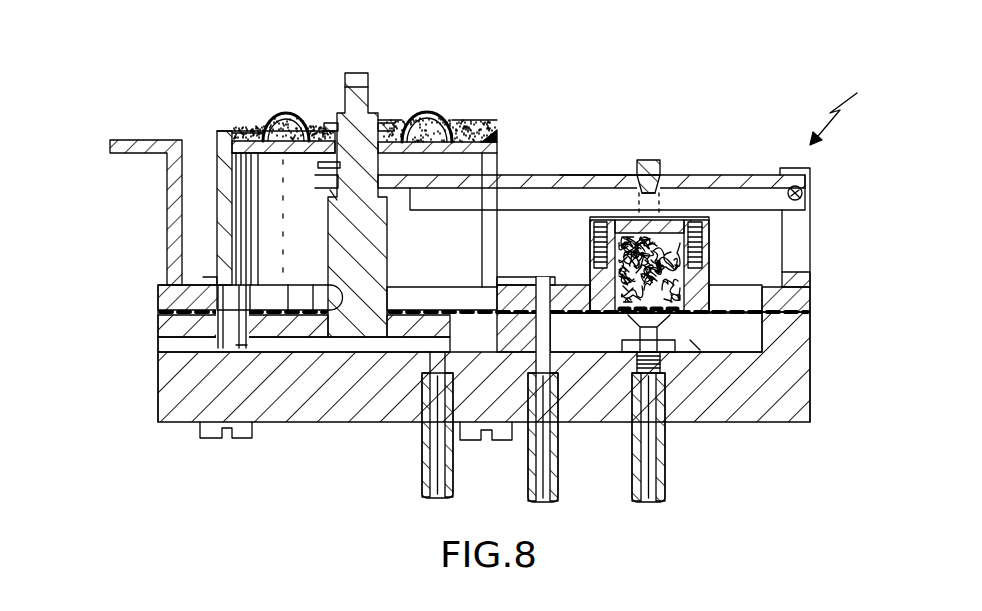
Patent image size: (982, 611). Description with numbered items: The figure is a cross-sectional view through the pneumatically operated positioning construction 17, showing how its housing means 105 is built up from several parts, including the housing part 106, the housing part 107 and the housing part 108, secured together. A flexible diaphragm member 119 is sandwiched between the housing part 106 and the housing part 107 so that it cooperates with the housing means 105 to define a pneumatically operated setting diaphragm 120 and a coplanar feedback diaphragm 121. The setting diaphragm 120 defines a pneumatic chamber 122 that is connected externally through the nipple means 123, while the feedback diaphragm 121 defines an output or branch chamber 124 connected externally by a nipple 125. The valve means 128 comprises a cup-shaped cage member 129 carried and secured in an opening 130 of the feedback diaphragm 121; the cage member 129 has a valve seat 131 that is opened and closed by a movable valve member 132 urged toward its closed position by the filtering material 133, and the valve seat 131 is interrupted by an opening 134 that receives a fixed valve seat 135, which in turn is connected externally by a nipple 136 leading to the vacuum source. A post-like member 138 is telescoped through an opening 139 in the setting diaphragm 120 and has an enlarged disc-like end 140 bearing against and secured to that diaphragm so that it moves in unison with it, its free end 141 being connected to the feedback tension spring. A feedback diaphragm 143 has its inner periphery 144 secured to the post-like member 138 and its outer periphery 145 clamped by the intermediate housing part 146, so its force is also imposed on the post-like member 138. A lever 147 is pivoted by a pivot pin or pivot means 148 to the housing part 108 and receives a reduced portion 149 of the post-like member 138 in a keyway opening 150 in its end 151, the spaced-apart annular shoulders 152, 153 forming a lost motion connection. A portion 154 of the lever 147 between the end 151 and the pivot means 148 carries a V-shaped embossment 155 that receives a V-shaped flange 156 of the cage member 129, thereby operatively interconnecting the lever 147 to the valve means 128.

The pneumatically operated positioning construction 17 is at (860, 78).
The housing means 105 is at (797, 363).
The housing part 106 is at (797, 398).
The housing part 107 is at (802, 297).
The housing part 108 is at (800, 279).
The flexible diaphragm member 119 is at (798, 318).
The pneumatically operated setting diaphragm 120 is at (240, 318).
The feedback diaphragm 121 is at (563, 287).
The pneumatic chamber 122 is at (242, 345).
The nipple means 123 is at (425, 472).
The output or branch chamber 124 is at (697, 343).
The nipple 125 is at (533, 466).
The valve means 128 is at (725, 250).
The cup-shaped cage member 129 is at (710, 243).
The opening 130 is at (700, 297).
The valve seat 131 is at (690, 328).
The movable valve member 132 is at (610, 267).
The filtering material 133 is at (663, 240).
The opening 134 is at (602, 337).
The fixed valve seat 135 is at (650, 333).
The nipple 136 is at (667, 477).
The post-like member 138 is at (387, 227).
The opening 139 is at (343, 298).
The enlarged disc-like end 140 is at (407, 338).
The free end 141 is at (368, 100).
The feedback diaphragm 143 is at (290, 112).
The inner periphery 144 is at (333, 123).
The outer periphery 145 is at (218, 165).
The intermediate housing part 146 is at (215, 167).
The lever 147 is at (540, 175).
The pivot pin or pivot means 148 is at (803, 197).
The reduced portion 149 is at (337, 180).
The keyway opening 150 is at (410, 177).
The end 151 is at (297, 182).
The annular shoulder 152 is at (336, 195).
The annular shoulder 153 is at (318, 165).
The portion of the lever 154 is at (628, 175).
The V-shaped embossment 155 is at (660, 193).
The V-shaped flange 156 is at (640, 180).